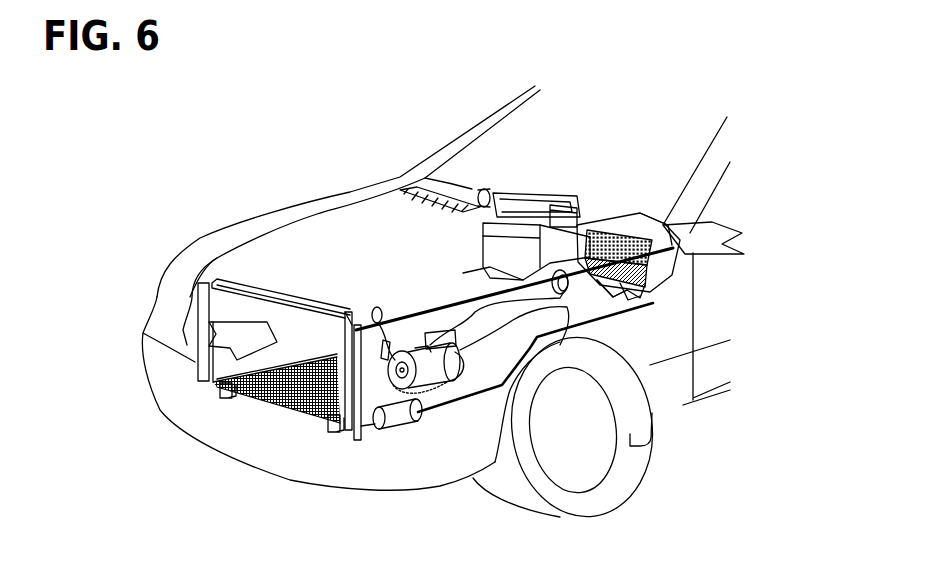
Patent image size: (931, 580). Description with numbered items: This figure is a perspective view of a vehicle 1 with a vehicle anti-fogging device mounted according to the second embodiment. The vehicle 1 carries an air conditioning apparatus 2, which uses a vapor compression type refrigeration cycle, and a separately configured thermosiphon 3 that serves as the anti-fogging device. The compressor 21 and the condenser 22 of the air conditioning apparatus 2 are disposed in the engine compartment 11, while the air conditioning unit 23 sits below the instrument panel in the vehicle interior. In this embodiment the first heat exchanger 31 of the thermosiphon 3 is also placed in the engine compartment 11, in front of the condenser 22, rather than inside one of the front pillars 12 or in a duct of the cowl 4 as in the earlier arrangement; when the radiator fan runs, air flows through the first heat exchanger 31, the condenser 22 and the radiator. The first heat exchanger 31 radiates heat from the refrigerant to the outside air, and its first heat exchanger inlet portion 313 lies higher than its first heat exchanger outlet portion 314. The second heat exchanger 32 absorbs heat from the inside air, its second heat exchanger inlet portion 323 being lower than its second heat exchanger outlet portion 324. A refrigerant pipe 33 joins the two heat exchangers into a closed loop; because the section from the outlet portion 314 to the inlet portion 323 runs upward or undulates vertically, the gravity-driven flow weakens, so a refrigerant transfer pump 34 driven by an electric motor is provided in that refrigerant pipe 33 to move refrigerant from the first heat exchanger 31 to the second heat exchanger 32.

The vehicle 1 is at (352, 160).
The engine compartment 11 is at (283, 257).
The front pillar 12 is at (510, 93).
The air conditioning apparatus 2 is at (361, 310).
The compressor 21 is at (428, 418).
The condenser 22 is at (253, 400).
The air conditioning unit 23 is at (517, 230).
The thermosiphon 3 is at (430, 305).
The first heat exchanger 31 is at (213, 279).
The first heat exchanger inlet portion 313 is at (343, 330).
The first heat exchanger outlet portion 314 is at (300, 352).
The second heat exchanger 32 is at (685, 296).
The second heat exchanger inlet portion 323 is at (668, 275).
The second heat exchanger outlet portion 324 is at (670, 247).
The refrigerant pipe 33 is at (442, 318).
The refrigerant transfer pump 34 is at (400, 430).
The cowl 4 is at (423, 190).